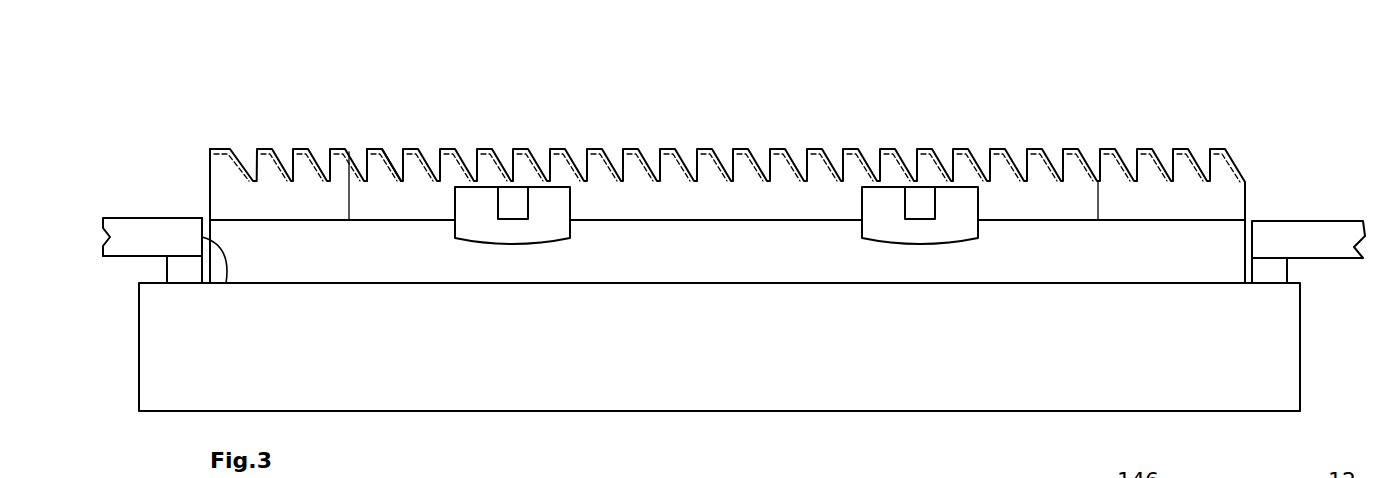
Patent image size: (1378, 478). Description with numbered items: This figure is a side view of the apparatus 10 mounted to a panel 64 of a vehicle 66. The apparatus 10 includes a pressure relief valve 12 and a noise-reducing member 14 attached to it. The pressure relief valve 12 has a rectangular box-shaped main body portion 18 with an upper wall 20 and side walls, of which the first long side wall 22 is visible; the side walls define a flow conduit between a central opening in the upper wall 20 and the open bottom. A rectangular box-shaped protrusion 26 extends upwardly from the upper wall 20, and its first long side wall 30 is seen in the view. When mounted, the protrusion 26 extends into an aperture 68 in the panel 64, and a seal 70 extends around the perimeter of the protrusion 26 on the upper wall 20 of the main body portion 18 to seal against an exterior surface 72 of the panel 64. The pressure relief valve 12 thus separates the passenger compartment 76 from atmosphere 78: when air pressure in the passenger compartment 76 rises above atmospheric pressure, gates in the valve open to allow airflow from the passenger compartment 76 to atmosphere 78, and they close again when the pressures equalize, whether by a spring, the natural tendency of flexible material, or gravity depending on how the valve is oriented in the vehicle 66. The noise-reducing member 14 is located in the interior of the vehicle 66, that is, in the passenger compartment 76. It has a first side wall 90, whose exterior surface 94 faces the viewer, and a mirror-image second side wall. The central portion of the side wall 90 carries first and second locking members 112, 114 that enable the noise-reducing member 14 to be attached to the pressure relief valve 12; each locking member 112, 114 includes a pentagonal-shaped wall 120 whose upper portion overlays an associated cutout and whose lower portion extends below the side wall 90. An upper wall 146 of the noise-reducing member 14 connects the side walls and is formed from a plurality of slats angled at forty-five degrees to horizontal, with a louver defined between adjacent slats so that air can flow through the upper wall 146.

The apparatus 10 is at (320, 125).
The pressure relief valve 12 is at (215, 382).
The noise-reducing member 14 is at (210, 172).
The main body portion 18 is at (667, 370).
The upper wall 20 is at (1295, 284).
The first long side wall 22 is at (930, 372).
The protrusion 26 is at (355, 262).
The first long side wall of the protrusion 30 is at (739, 258).
The panel 64 is at (176, 240).
The vehicle 66 is at (145, 233).
The aperture 68 is at (226, 283).
The seal 70 is at (180, 272).
The exterior surface 72 is at (122, 258).
The passenger compartment 76 is at (840, 115).
The atmosphere 78 is at (520, 445).
The first side wall 90 is at (663, 208).
The exterior surface 94 is at (597, 200).
The first locking member 112 is at (541, 228).
The second locking member 114 is at (951, 227).
The pentagonal-shaped wall 120 is at (481, 223).
The upper wall 146 is at (379, 148).